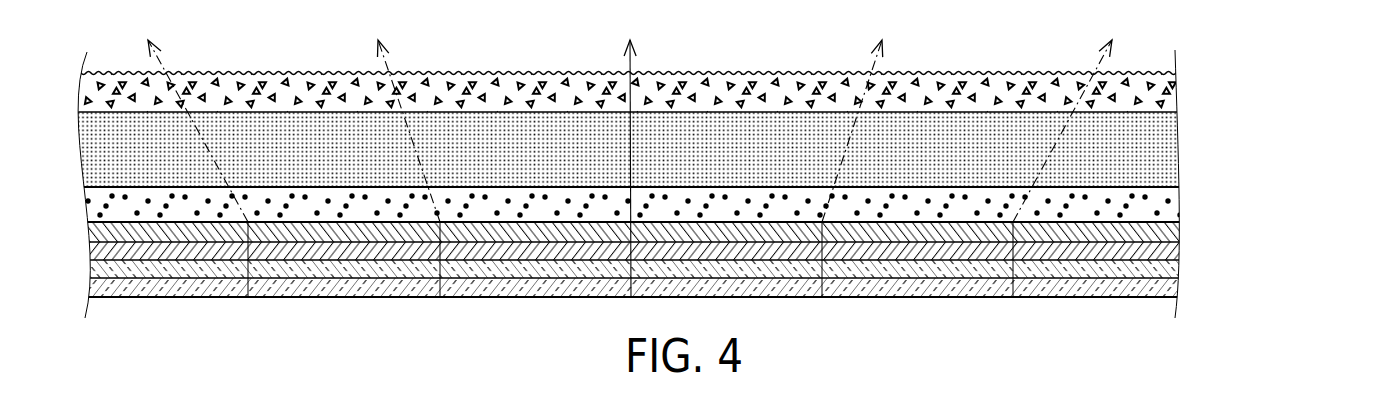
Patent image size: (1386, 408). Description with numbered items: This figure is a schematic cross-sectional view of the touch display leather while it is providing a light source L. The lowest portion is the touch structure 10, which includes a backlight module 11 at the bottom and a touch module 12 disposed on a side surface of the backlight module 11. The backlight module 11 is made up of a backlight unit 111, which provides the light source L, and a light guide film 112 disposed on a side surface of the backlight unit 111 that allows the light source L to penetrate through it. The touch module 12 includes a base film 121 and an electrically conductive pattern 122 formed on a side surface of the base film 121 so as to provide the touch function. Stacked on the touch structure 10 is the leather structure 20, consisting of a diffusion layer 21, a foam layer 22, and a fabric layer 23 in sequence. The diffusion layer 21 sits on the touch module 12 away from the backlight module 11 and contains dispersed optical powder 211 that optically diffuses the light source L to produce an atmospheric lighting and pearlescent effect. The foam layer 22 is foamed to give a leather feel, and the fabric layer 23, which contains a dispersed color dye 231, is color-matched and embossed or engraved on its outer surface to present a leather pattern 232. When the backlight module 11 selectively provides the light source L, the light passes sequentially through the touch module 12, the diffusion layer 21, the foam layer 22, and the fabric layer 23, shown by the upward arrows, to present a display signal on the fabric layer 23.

The touch structure 10 is at (711, 268).
The backlight module 11 is at (687, 300).
The backlight unit 111 is at (1183, 290).
The light guide film 112 is at (1183, 267).
The touch module 12 is at (687, 233).
The base film 121 is at (1180, 248).
The electrically conductive pattern 122 is at (1180, 232).
The leather structure 20 is at (658, 117).
The diffusion layer 21 is at (630, 194).
The optical powder 211 is at (88, 210).
The foam layer 22 is at (1155, 155).
The fabric layer 23 is at (630, 63).
The color dye 231 is at (82, 100).
The leather pattern 232 is at (325, 73).
The light source L is at (628, 100).